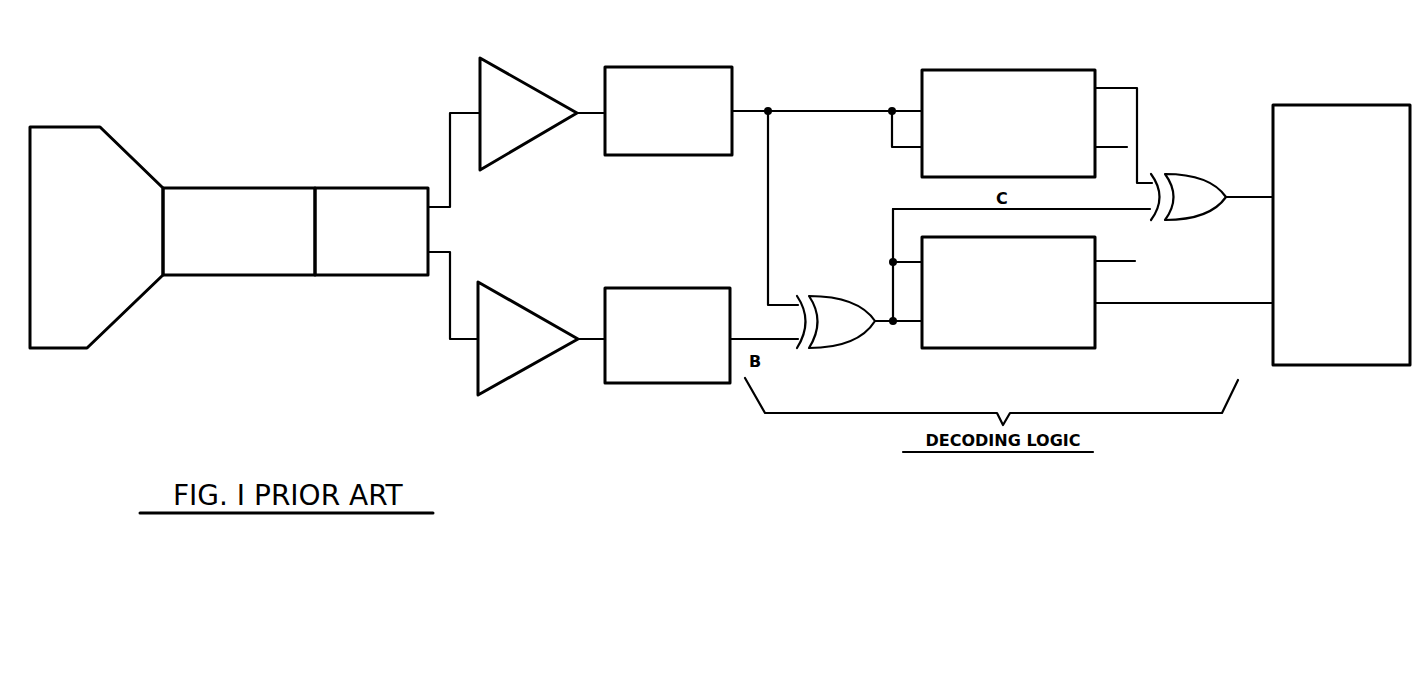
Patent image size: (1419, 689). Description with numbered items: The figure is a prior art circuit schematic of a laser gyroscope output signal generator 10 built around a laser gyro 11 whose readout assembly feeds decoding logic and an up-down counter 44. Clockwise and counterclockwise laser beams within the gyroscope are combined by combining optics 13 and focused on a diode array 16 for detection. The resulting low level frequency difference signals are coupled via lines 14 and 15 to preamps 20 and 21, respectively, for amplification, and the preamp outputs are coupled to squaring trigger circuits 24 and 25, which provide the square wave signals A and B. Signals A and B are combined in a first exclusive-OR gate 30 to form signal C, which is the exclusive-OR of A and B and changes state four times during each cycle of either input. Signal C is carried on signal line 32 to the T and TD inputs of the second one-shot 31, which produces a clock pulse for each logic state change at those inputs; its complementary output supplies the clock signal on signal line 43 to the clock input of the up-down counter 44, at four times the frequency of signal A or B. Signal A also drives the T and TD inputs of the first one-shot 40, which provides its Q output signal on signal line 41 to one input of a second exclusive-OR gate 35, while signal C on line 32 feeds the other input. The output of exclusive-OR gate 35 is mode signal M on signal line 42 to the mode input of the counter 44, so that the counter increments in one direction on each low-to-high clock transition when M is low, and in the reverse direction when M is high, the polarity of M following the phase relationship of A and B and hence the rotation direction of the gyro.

The signal processing system 10 is at (822, 92).
The laser gyro 11 is at (128, 141).
The combining optics 13 is at (221, 256).
The line 14 is at (440, 205).
The line 15 is at (440, 258).
The diode array 16 is at (355, 263).
The preamp 20 is at (503, 92).
The preamp 21 is at (505, 320).
The squaring trigger circuit 24 is at (655, 86).
The squaring trigger circuit 25 is at (683, 308).
The exclusive-OR gate 30 is at (840, 318).
The ONE-SHOT #2 31 is at (997, 327).
The signal line 32 is at (877, 325).
The exclusive-OR gate 35 is at (1190, 198).
The ONE-SHOT #1 40 is at (981, 90).
The signal line 41 is at (1137, 106).
The signal line 42 is at (1238, 201).
The signal line 43 is at (1196, 306).
The up-down counter 44 is at (1318, 305).